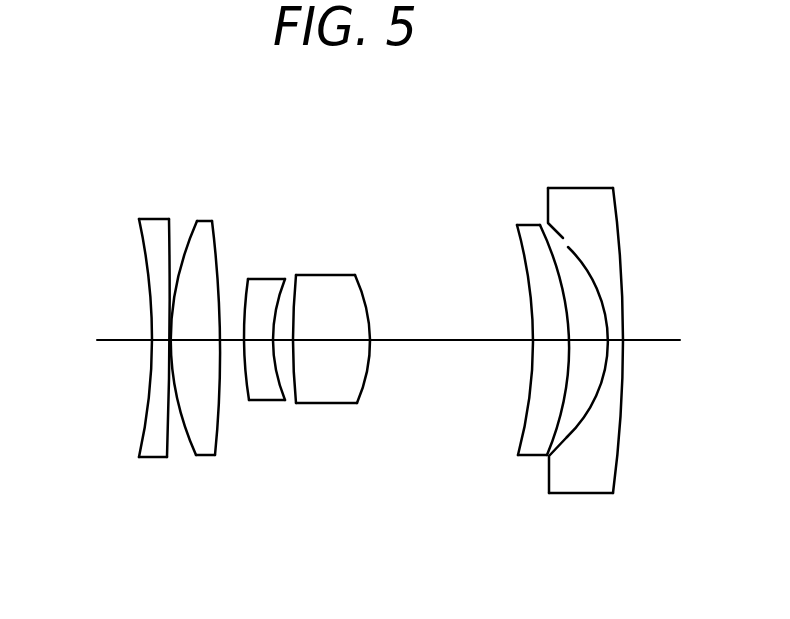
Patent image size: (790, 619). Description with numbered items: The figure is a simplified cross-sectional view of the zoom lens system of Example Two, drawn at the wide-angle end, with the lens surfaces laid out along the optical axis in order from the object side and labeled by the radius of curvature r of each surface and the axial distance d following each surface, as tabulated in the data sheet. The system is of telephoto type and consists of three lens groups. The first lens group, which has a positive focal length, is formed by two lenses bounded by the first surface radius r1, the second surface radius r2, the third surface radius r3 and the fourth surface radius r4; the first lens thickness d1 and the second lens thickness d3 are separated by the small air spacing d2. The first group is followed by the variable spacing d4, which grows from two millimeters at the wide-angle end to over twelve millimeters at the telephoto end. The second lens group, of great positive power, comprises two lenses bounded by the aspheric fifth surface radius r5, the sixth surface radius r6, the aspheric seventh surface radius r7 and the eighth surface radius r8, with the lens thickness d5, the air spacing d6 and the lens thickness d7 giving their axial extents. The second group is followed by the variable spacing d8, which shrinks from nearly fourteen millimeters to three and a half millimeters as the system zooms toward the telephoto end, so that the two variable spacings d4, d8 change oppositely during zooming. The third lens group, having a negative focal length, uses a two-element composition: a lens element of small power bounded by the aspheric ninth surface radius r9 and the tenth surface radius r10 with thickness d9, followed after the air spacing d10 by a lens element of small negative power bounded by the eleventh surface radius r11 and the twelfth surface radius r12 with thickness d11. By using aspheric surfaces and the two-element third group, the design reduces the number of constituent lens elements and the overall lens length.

The radius of curvature of first lens surface r1 is at (139, 219).
The radius of curvature of second lens surface r2 is at (168, 219).
The radius of curvature of third lens surface r3 is at (197, 221).
The radius of curvature of fourth lens surface r4 is at (212, 221).
The radius of curvature of fifth lens surface r5 is at (248, 278).
The radius of curvature of sixth lens surface r6 is at (285, 278).
The radius of curvature of seventh lens surface r7 is at (296, 275).
The radius of curvature of eighth lens surface r8 is at (356, 275).
The radius of curvature of ninth lens surface r9 is at (517, 225).
The radius of curvature of tenth lens surface r10 is at (540, 225).
The radius of curvature of eleventh lens surface r11 is at (548, 188).
The radius of curvature of twelfth lens surface r12 is at (613, 188).
The thickness of first lens d1 is at (158, 341).
The air spacing between first and second lenses d2 is at (175, 341).
The thickness of second lens d3 is at (193, 341).
The variable spacing between first and second lens groups d4 is at (233, 341).
The thickness of third lens d5 is at (257, 341).
The air spacing within second lens group d6 is at (288, 341).
The thickness of fourth lens d7 is at (323, 341).
The variable spacing between second and third lens groups d8 is at (443, 341).
The thickness of small-power lens element of third group d9 is at (542, 341).
The air spacing within third lens group d10 is at (580, 341).
The thickness of negative lens element of third group d11 is at (613, 341).